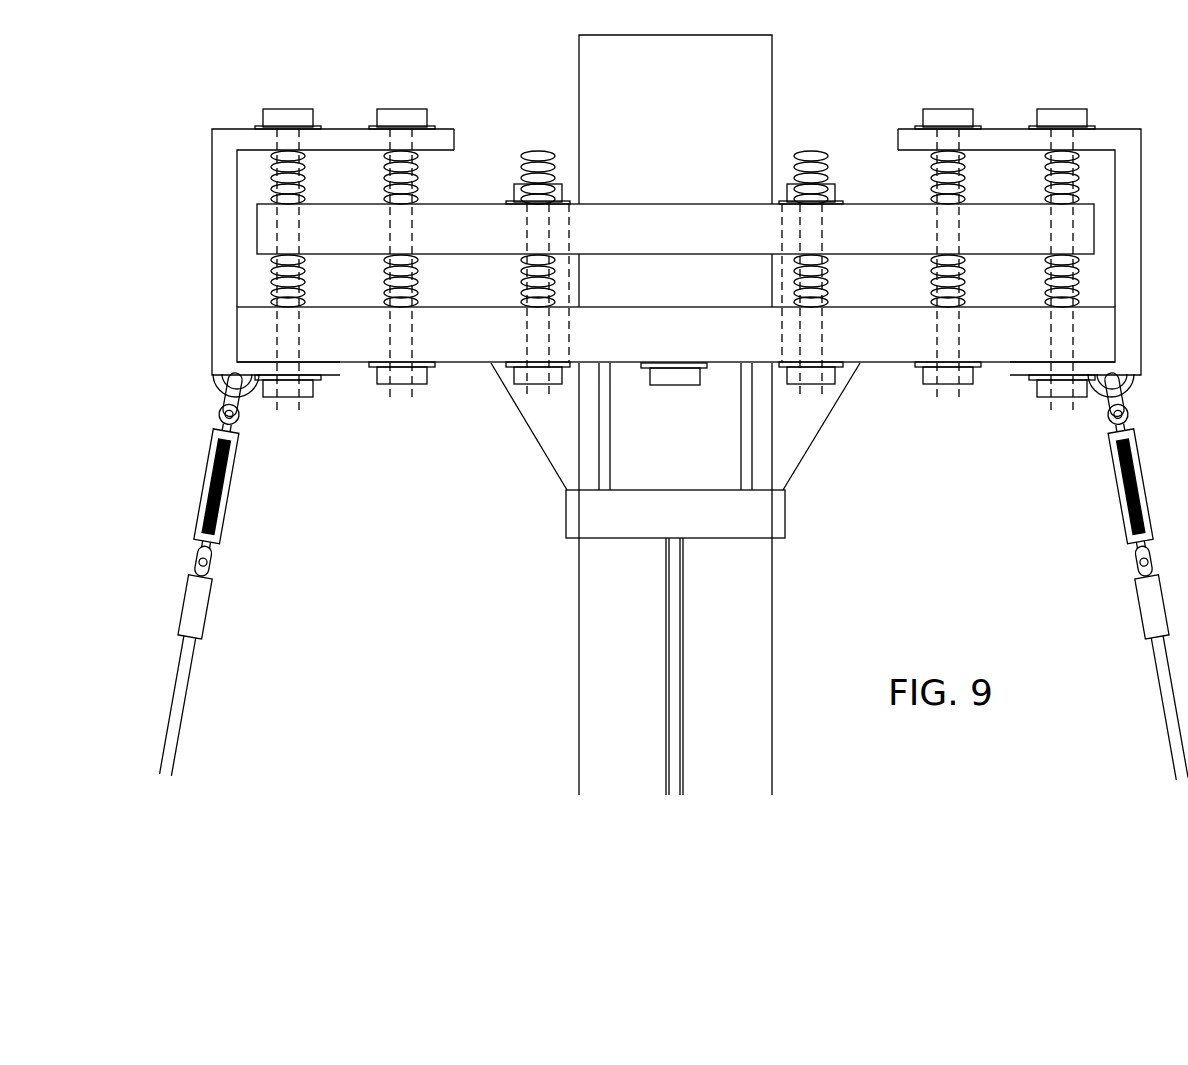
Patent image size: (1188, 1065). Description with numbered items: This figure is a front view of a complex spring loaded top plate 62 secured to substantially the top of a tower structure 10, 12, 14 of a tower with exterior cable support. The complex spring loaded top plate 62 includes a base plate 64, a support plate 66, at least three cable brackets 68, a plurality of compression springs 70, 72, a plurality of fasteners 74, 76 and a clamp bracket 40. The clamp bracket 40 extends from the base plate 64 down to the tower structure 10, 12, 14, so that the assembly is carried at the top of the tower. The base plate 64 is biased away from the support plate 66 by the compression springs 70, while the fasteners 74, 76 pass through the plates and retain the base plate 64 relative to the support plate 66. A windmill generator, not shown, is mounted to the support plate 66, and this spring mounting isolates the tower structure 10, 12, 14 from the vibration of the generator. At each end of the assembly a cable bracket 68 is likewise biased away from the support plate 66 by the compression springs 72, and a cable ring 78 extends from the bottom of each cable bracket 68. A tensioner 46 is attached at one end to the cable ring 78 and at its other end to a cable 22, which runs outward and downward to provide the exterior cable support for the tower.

The tower structure 10 is at (790, 415).
The tower structure 12 is at (790, 415).
The tower structure 14 is at (785, 615).
The cable 22 is at (1153, 662).
The clamp bracket 40 is at (530, 430).
The tensioner 46 is at (1112, 493).
The complex spring loaded top plate 62 is at (644, 227).
The base plate 64 is at (888, 363).
The support plate 66 is at (878, 205).
The cable bracket 68 is at (210, 262).
The compression springs 70 is at (383, 287).
The compression springs 72 is at (417, 183).
The fastener 74 is at (543, 185).
The fastener 76 is at (282, 110).
The cable ring 78 is at (1100, 397).